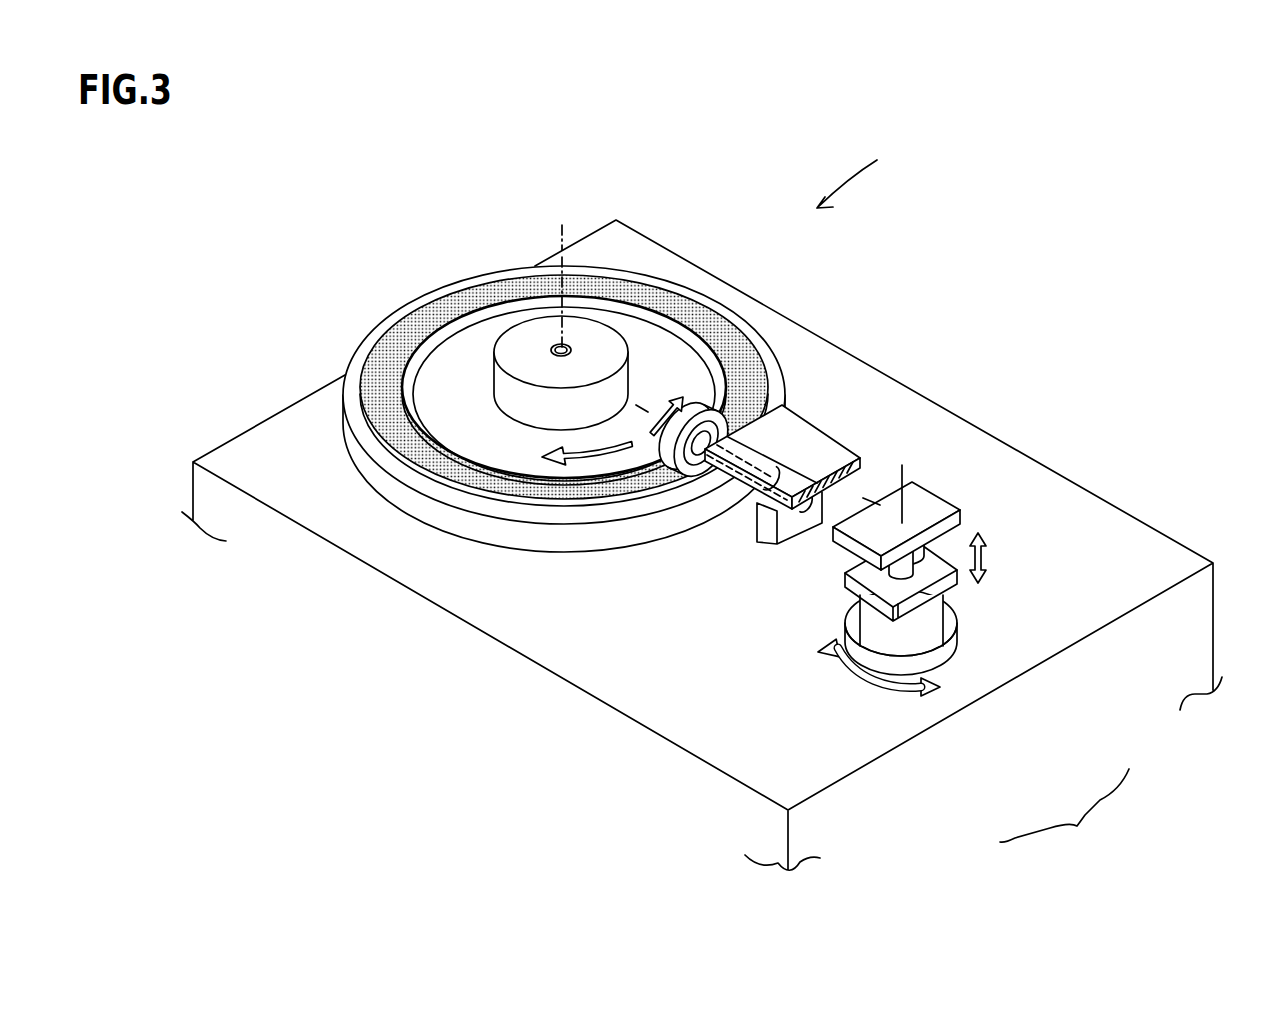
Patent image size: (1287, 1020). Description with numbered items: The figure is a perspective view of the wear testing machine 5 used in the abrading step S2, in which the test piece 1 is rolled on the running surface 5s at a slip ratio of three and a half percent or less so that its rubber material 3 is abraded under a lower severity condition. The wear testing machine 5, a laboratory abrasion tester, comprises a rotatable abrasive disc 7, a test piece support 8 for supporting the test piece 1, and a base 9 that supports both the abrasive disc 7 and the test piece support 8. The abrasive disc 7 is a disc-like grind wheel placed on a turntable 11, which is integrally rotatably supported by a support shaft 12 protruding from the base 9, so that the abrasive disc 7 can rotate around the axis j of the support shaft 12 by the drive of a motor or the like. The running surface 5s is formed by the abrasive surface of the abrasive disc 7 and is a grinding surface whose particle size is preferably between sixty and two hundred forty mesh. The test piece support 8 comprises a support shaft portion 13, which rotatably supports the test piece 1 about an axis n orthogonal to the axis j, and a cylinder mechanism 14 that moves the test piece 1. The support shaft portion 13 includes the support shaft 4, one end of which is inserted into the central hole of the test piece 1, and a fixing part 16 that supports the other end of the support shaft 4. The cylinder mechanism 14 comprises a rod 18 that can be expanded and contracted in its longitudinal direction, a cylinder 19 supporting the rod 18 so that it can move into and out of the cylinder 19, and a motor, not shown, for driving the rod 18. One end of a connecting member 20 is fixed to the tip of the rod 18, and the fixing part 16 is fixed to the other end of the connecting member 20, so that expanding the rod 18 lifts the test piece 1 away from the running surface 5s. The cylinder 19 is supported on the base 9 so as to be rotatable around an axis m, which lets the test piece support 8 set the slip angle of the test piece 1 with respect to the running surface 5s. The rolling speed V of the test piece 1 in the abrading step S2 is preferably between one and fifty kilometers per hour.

The test piece 1 is at (692, 413).
The rubber material 3 is at (765, 368).
The support shaft 4 is at (678, 450).
The wear testing machine 5 is at (697, 198).
The running surface 5s is at (378, 407).
The abrasive disc 7 is at (462, 303).
The test piece support 8 is at (512, 776).
The support shaft portion 13 is at (663, 656).
The base 9 is at (1088, 544).
The turntable 11 is at (360, 365).
The support shaft 12 is at (547, 330).
The cylinder mechanism 14 is at (1064, 814).
The fixing part 16 is at (768, 523).
The rod 18 is at (907, 572).
The cylinder 19 is at (918, 638).
The connecting member 20 is at (913, 503).
The axis j is at (565, 226).
The axis n is at (640, 408).
The axis m is at (888, 458).
The rolling speed V is at (603, 460).
The abrading step S2 is at (866, 175).